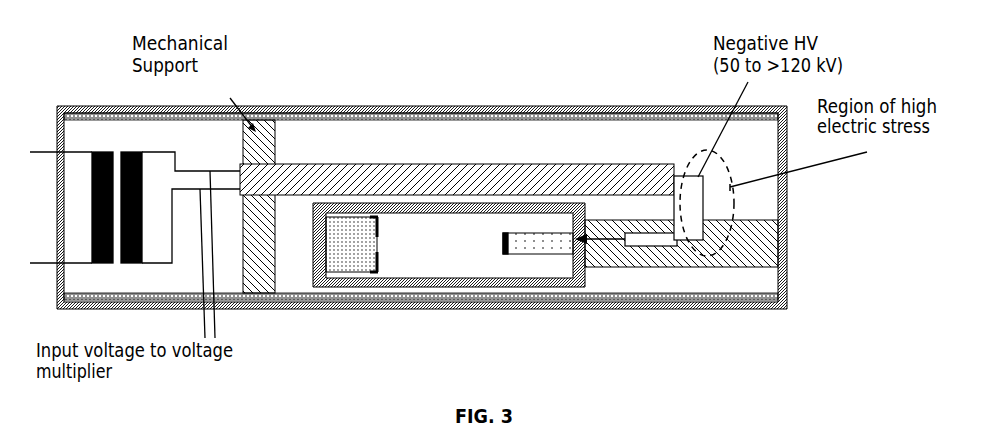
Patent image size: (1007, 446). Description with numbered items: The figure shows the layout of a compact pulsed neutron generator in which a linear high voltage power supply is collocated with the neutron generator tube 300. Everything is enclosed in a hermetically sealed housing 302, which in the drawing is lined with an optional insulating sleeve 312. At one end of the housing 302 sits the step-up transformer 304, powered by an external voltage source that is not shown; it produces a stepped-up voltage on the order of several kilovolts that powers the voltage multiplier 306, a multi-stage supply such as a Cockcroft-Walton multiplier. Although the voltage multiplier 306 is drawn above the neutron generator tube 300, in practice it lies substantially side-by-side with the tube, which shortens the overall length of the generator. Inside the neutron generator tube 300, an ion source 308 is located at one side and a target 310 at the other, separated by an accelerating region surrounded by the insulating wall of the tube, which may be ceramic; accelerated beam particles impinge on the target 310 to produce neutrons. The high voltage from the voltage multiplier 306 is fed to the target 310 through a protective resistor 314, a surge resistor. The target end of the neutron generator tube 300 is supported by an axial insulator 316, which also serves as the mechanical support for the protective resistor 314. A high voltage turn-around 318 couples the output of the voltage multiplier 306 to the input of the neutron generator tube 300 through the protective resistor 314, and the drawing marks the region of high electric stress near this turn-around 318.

The neutron generator tube 300 is at (423, 267).
The hermetically sealed housing 302 is at (367, 312).
The step-up transformer 304 is at (90, 150).
The voltage multiplier 306 is at (454, 170).
The ion source 308 is at (353, 253).
The target 310 is at (513, 256).
The insulating sleeve (optional) 312 is at (295, 115).
The protective resistor 314 is at (653, 238).
The axial insulator 316 is at (750, 257).
The high voltage turn-around 318 is at (703, 203).